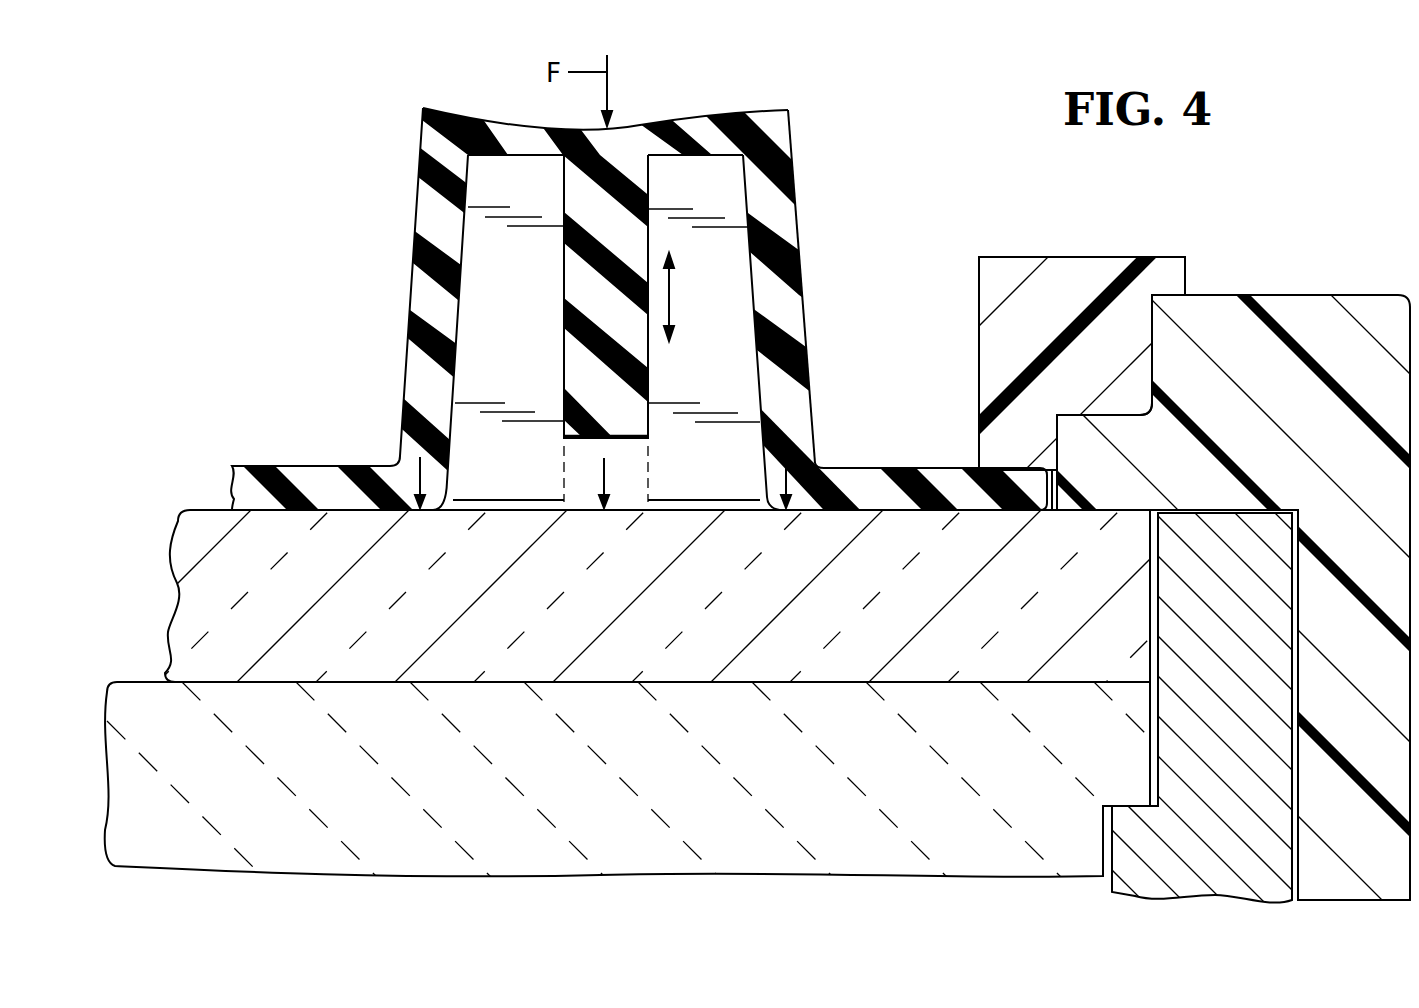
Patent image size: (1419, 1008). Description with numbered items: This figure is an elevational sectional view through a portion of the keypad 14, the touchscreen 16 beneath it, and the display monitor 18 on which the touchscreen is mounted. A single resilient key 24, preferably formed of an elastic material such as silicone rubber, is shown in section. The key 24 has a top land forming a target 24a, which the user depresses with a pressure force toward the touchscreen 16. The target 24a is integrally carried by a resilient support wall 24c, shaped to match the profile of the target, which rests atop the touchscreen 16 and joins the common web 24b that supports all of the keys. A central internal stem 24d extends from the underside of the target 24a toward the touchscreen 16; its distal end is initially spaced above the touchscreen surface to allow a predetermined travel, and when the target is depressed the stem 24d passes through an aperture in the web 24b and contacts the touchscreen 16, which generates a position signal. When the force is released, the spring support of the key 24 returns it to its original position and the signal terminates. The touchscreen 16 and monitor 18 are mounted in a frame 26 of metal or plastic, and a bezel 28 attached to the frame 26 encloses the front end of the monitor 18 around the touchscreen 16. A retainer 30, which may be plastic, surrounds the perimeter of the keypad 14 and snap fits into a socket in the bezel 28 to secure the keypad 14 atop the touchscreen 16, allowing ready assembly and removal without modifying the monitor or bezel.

The keypad 14 is at (296, 452).
The touchscreen 16 is at (185, 533).
The display monitor 18 is at (140, 695).
The key 24 is at (416, 100).
The target 24a is at (706, 115).
The web 24b is at (930, 466).
The support wall 24c is at (412, 268).
The stem 24d is at (564, 372).
The frame 26 is at (1118, 882).
The bezel 28 is at (1307, 307).
The retainer 30 is at (979, 295).